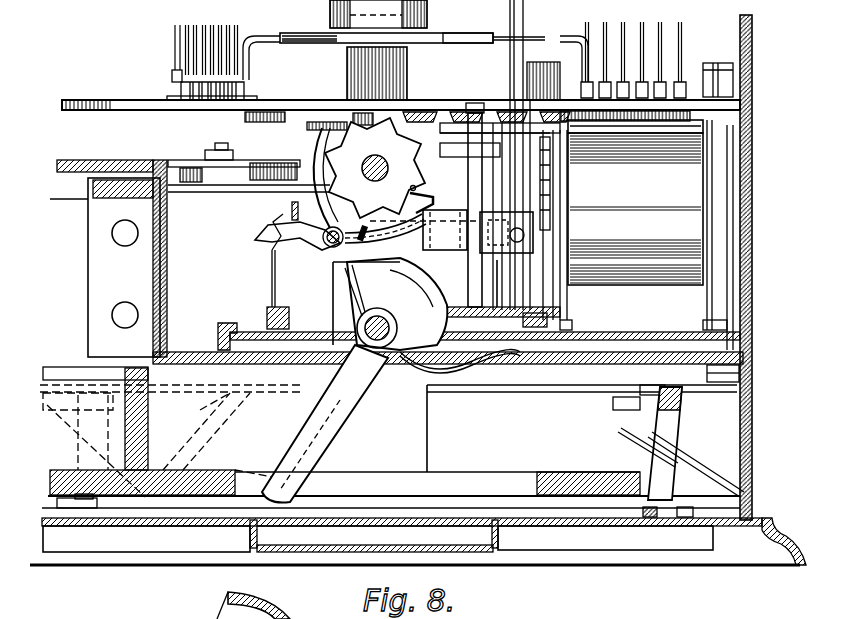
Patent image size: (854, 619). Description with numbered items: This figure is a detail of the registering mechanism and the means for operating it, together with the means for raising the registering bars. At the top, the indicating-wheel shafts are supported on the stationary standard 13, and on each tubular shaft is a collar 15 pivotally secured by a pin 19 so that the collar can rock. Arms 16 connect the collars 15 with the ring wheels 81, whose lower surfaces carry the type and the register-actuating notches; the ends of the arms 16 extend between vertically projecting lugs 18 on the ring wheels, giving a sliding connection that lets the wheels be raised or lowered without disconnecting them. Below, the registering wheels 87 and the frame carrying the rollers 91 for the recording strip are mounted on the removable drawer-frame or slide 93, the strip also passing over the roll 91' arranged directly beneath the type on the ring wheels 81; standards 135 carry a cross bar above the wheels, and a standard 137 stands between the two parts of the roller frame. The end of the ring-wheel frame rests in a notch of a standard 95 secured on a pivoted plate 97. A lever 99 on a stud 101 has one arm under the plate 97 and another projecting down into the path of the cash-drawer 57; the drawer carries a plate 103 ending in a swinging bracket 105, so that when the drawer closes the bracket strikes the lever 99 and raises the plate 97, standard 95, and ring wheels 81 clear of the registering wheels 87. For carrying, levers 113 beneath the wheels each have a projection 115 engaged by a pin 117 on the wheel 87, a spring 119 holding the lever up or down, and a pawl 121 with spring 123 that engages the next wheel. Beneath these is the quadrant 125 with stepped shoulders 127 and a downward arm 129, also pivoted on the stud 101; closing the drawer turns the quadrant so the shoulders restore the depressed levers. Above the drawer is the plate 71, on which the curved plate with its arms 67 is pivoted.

The stationary standard 13 is at (516, 16).
The collar 15 is at (345, 45).
The arms 16 is at (195, 40).
The vertically projecting lugs 18 is at (172, 94).
The screws or pins 19 is at (340, 4).
The cash-drawer 57 is at (190, 470).
The arms 67 is at (240, 158).
The plate 71 is at (78, 150).
The ring wheels 81 is at (164, 111).
The registering wheels 87 is at (413, 172).
The rollers 91 is at (646, 235).
The roll 91' is at (682, 116).
The drawer-frame or slide 93 is at (240, 330).
The standard 95 is at (451, 231).
The pivoted plate 97 is at (498, 306).
The lever 99 is at (390, 304).
The stud 101 is at (367, 290).
The plate 103 is at (497, 400).
The swinging bracket 105 is at (650, 392).
The levers 113 is at (420, 213).
The spur or projection 115 is at (375, 168).
The pin 117 is at (403, 186).
The spring 119 is at (272, 263).
The pawl 121 is at (313, 200).
The spring 123 is at (392, 241).
The quadrant 125 is at (445, 272).
The shoulders 127 is at (258, 598).
The arm 129 is at (328, 436).
The standards 135 is at (727, 183).
The standard 137 is at (680, 466).